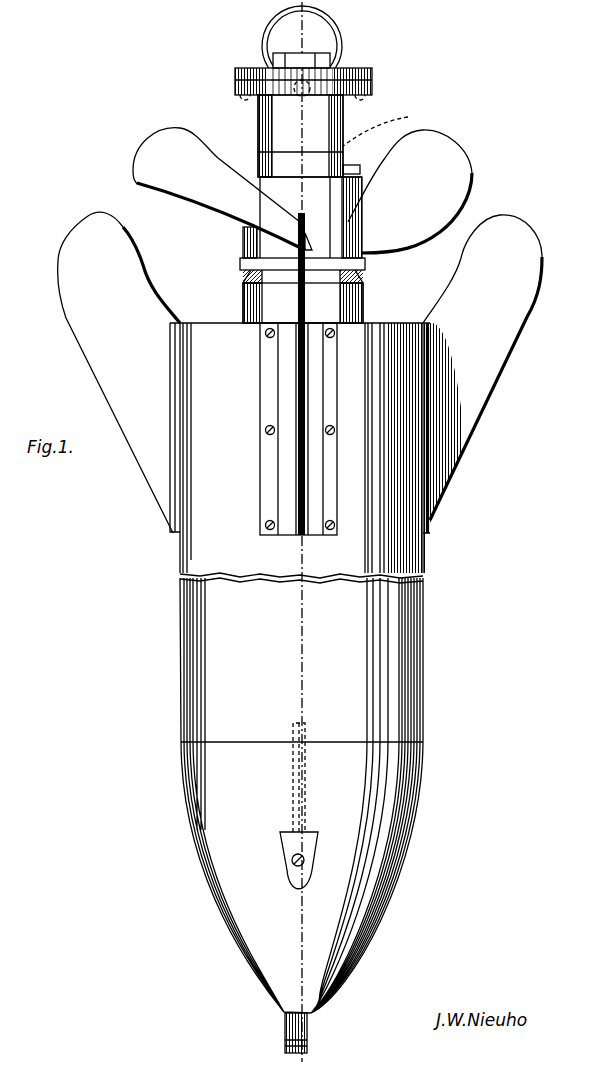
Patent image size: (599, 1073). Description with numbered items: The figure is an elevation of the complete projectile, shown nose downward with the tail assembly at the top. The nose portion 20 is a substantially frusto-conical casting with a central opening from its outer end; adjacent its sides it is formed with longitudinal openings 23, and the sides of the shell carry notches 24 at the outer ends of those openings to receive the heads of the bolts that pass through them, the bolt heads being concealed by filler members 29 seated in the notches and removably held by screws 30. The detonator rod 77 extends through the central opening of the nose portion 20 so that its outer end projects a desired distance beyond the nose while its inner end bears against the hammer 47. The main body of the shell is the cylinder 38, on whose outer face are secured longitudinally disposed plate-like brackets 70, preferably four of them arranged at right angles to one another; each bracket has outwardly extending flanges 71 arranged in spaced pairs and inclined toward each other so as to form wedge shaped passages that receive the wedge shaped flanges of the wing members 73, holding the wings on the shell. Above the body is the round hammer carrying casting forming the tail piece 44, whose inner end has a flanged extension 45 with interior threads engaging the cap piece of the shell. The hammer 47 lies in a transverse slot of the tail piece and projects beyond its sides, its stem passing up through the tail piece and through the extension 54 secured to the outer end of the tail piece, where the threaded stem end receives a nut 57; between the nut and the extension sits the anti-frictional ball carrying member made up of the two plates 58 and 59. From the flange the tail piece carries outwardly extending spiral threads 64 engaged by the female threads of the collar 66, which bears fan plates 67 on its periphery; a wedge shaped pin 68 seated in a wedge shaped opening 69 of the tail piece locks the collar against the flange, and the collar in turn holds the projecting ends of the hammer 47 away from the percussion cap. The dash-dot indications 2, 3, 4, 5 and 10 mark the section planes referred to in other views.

The nut 57 is at (307, 53).
The plate 58 is at (372, 71).
The plate 59 is at (374, 91).
The section line 10- 10 is at (366, 115).
The extension 54 is at (387, 124).
The wedge shaped opening 69 is at (410, 164).
The tail piece 44 is at (262, 162).
The pin 68 is at (354, 165).
The fan plates 67 is at (455, 157).
The section line 2- 2 is at (545, 173).
The collar 66 is at (283, 198).
The hammer 47 is at (241, 259).
The spiral threads 64 is at (305, 264).
The section line 3- 3 is at (415, 268).
The flanged extension 45 is at (247, 300).
The wing members 73 is at (548, 313).
The section line 4- 4 is at (538, 393).
The brackets 70 is at (293, 492).
The flanges 71 is at (282, 517).
The cylinder 38 is at (185, 665).
The section line 5- 5 is at (450, 752).
The longitudinal openings 23 is at (293, 797).
The filler members 29 is at (290, 860).
The notches 24 is at (318, 845).
The nose portion 20 is at (397, 863).
The screws 30 is at (295, 867).
The detonator rod 77 is at (308, 1022).